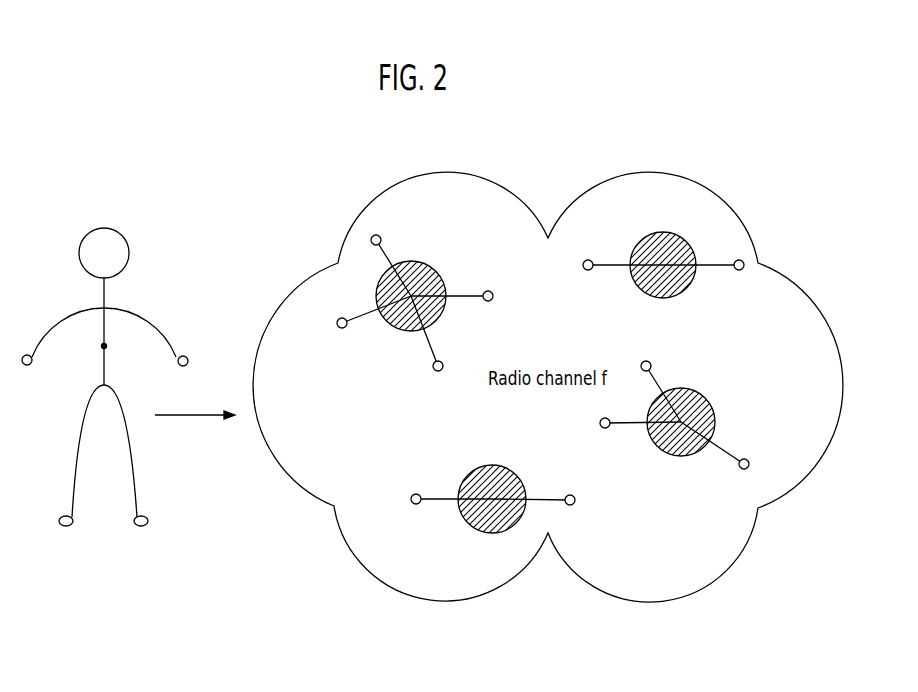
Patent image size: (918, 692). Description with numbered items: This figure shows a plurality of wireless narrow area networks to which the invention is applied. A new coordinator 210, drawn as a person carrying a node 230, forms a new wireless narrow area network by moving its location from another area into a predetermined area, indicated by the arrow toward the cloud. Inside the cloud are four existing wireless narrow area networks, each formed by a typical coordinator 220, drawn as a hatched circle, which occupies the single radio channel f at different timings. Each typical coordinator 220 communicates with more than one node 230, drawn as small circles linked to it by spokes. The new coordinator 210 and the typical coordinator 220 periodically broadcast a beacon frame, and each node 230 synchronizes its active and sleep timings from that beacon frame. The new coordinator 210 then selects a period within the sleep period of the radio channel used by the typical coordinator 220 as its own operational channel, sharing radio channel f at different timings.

The new coordinator 210 is at (174, 344).
The typical coordinator 220 is at (416, 263).
The node 230 is at (104, 346).